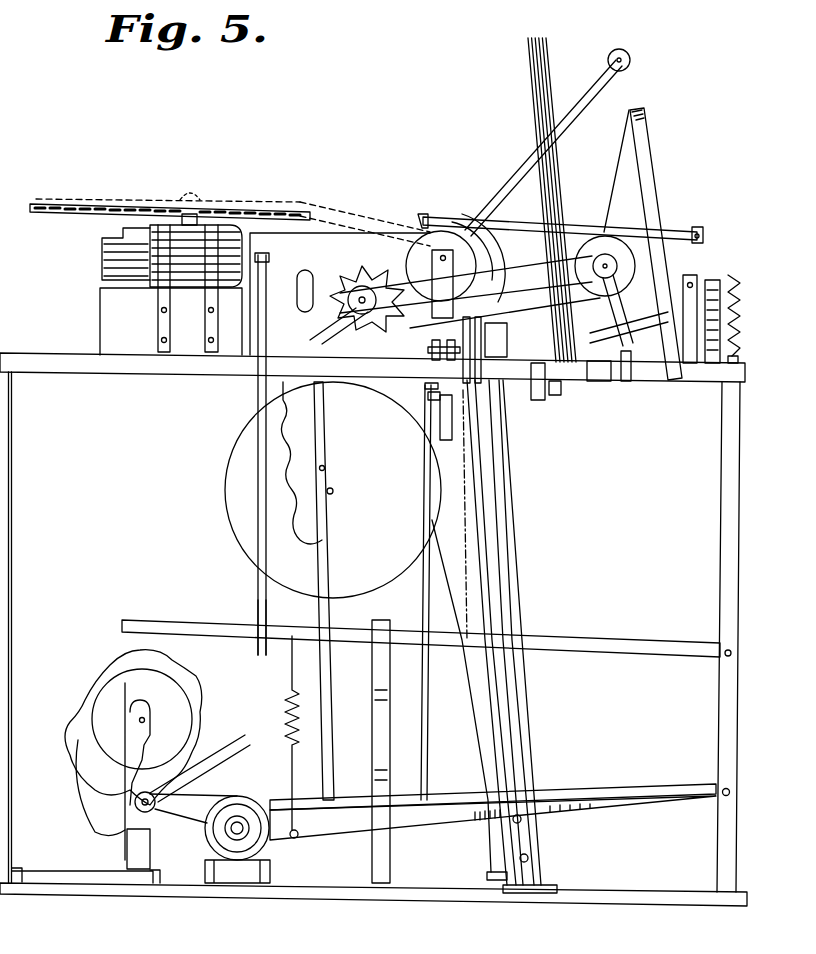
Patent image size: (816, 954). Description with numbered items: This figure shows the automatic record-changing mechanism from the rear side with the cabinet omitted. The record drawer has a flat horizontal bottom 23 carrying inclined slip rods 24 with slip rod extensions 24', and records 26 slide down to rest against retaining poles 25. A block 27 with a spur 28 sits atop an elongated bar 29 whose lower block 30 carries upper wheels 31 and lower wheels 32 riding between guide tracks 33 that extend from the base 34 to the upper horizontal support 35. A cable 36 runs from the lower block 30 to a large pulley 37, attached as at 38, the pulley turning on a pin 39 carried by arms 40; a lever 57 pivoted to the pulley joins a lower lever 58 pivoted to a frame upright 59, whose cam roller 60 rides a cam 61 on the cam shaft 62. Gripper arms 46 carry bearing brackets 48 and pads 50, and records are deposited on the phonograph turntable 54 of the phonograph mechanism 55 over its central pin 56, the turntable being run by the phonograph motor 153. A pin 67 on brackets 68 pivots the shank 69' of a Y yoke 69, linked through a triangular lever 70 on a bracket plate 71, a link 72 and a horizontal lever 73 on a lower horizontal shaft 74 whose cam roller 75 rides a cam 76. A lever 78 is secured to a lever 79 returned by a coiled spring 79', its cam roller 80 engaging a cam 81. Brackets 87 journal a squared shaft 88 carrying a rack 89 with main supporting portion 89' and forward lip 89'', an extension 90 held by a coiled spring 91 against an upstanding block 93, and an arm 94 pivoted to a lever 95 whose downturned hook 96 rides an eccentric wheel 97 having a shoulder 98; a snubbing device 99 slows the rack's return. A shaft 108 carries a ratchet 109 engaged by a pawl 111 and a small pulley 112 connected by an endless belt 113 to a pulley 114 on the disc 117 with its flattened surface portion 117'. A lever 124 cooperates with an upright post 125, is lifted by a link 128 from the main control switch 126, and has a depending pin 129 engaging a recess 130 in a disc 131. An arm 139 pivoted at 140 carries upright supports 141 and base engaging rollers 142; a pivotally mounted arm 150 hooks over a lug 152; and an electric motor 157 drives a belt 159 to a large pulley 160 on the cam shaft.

The flat horizontal bottom 23 is at (592, 380).
The slip rods 24 is at (633, 383).
The slip rod extensions 24' is at (629, 334).
The retaining poles 25 is at (518, 262).
The records 26 is at (530, 104).
The block 27 is at (504, 306).
The spur 28 is at (495, 339).
The elongated bar 29 is at (515, 545).
The lower block 30 is at (535, 847).
The upper wheels 31 is at (526, 820).
The lower wheels 32 is at (532, 860).
The guide tracks 33 is at (515, 705).
The base 34 is at (660, 900).
The upper horizontal support 35 is at (185, 372).
The cable 36 is at (489, 832).
The large pulley 37 is at (325, 536).
The cable attachment 38 is at (396, 428).
The pin or shaft 39 is at (340, 492).
The arms 40 is at (340, 444).
The spaced arms 46 is at (562, 140).
The bearing brackets 48 is at (598, 92).
The resilient discs or pads 50 is at (630, 56).
The phonograph turntable 54 is at (70, 206).
The phonograph mechanism 55 is at (100, 270).
The central pin 56 is at (192, 196).
The lever 57 is at (322, 668).
The lower lever 58 is at (334, 798).
The frame upright 59 is at (720, 751).
The cam roller 60 is at (136, 786).
The cam 61 is at (205, 758).
The cam shaft 62 is at (140, 720).
The pin 67 is at (452, 346).
The brackets 68 is at (430, 352).
The Y yoke 69 is at (443, 350).
The shank 69' is at (449, 429).
The triangular lever 70 is at (428, 398).
The bracket plate 71 is at (425, 388).
The link 72 is at (425, 668).
The horizontal lever 73 is at (432, 798).
The lower horizontal shaft 74 is at (732, 792).
The cam roller 75 is at (136, 808).
The cam 76 is at (120, 770).
The lever 78 is at (462, 582).
The lever 79 is at (493, 827).
The coiled spring 79' is at (273, 770).
The cam roller 80 is at (140, 832).
The cam 81 is at (105, 826).
The brackets 87 is at (688, 366).
The squared shaft 88 is at (700, 262).
The rack 89 is at (662, 239).
The main supporting portion 89' is at (650, 171).
The forward lip 89'' is at (652, 308).
The extension 90 is at (712, 275).
The coiled spring 91 is at (736, 300).
The upstanding block 93 is at (742, 322).
The arm 94 is at (708, 226).
The lever 95 is at (574, 232).
The downturned hook 96 is at (424, 214).
The wheel 97 is at (466, 232).
The shoulder 98 is at (448, 232).
The snubbing device 99 is at (705, 372).
The shaft 108 is at (330, 322).
The ratchet 109 is at (308, 300).
The pawl 111 is at (367, 290).
The small pulley 112 is at (352, 312).
The endless belt 113 is at (505, 232).
The pulley 114 is at (652, 226).
The disc 117 is at (619, 291).
The flattened surface portion 117' is at (619, 214).
The lever 124 is at (255, 628).
The upright post 125 is at (386, 725).
The main control switch 126 is at (262, 262).
The link 128 is at (262, 358).
The depending pin 129 is at (120, 632).
The recess 130 is at (176, 670).
The disc 131 is at (186, 684).
The arm 139 is at (76, 884).
The pivot 140 is at (22, 870).
The upright supports 141 is at (152, 856).
The base engaging rollers 142 is at (160, 884).
The pivotally mounted arm 150 is at (540, 384).
The lug 152 is at (556, 382).
The phonograph motor 153 is at (180, 246).
The electric motor 157 is at (266, 850).
The belt 159 is at (215, 746).
The large pulley 160 is at (178, 712).